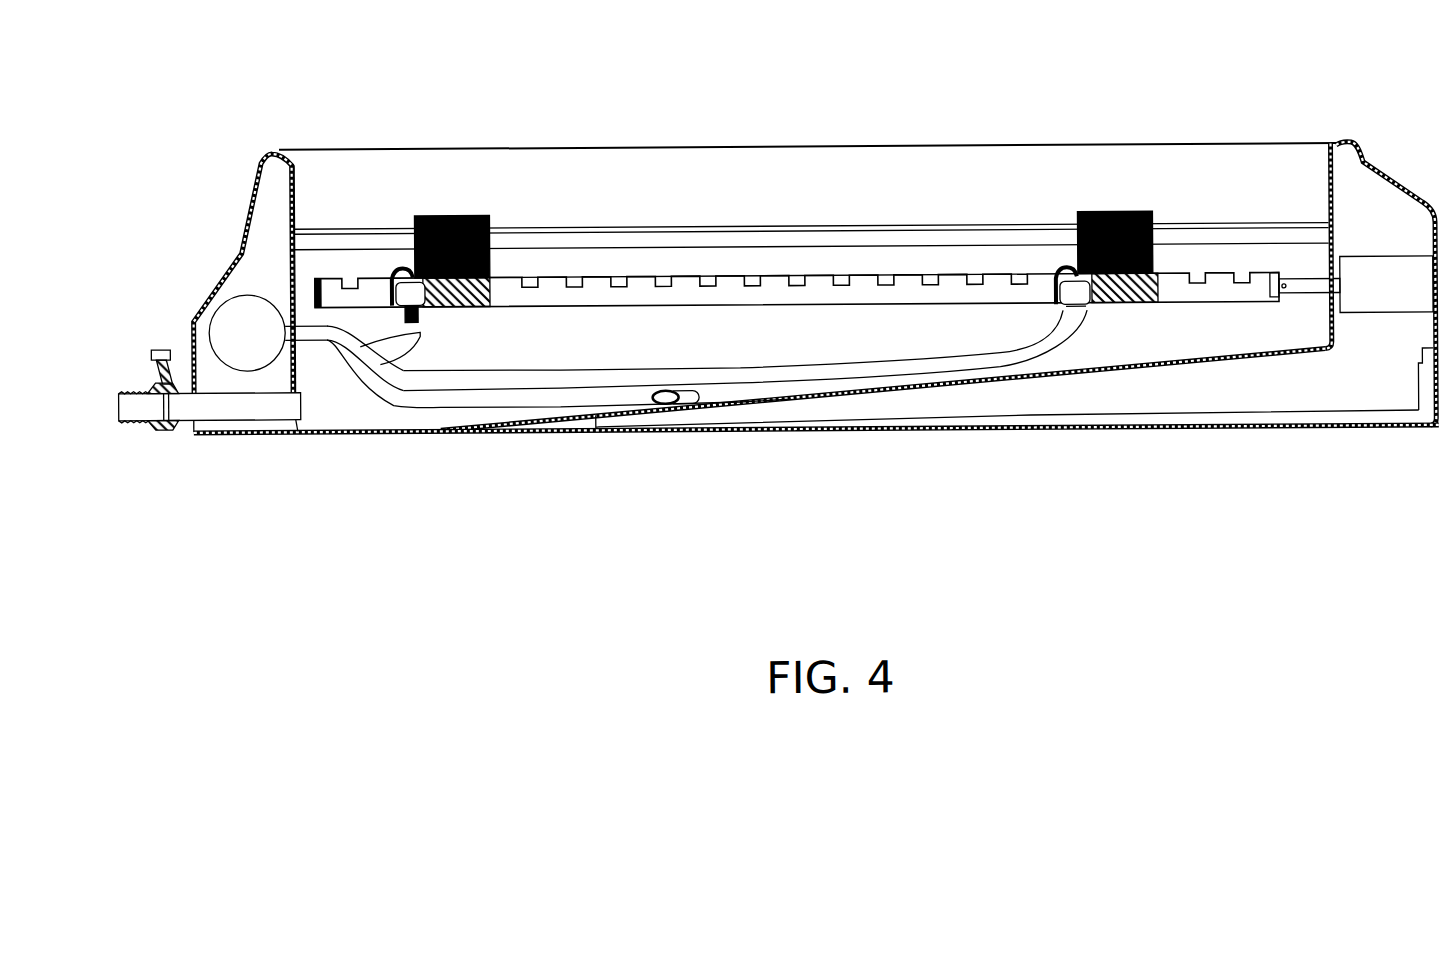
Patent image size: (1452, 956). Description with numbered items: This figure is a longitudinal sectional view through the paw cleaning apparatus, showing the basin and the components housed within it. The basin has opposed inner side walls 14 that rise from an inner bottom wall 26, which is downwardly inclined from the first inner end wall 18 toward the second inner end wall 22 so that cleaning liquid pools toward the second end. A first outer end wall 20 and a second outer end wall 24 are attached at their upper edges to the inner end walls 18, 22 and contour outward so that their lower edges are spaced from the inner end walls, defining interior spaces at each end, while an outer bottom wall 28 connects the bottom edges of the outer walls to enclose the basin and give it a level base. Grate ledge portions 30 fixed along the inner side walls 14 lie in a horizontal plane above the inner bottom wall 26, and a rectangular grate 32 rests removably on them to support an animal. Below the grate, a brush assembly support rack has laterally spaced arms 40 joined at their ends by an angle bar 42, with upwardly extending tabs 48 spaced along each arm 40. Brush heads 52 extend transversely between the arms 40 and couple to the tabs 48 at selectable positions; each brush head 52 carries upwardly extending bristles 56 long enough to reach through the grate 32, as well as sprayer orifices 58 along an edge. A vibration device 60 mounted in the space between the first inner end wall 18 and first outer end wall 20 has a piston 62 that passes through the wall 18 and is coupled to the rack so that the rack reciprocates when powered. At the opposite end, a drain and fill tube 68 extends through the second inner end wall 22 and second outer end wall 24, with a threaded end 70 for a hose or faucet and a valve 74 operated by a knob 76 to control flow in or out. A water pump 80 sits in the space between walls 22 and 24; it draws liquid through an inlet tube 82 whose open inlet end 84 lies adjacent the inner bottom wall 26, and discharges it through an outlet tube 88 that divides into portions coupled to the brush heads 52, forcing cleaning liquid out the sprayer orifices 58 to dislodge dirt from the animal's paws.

The inner side walls 14 is at (636, 184).
The first inner end wall 18 is at (1327, 180).
The first outer end wall 20 is at (1418, 197).
The second inner end wall 22 is at (298, 184).
The second outer end wall 24 is at (252, 185).
The inner bottom wall 26 is at (1243, 363).
The outer bottom wall 28 is at (571, 432).
The grate ledge portions 30 is at (873, 245).
The grate 32 is at (805, 226).
The rack arms 40 is at (683, 308).
The angle bar 42 is at (331, 277).
The tabs 48 is at (738, 274).
The brush head 52 is at (457, 306).
The bristles 56 is at (453, 213).
The sprayer orifices 58 is at (405, 270).
The vibration device 60 is at (1388, 316).
The piston 62 is at (1308, 300).
The drain and fill tube 68 is at (240, 410).
The threaded end 70 is at (130, 418).
The valve 74 is at (163, 419).
The knob 76 is at (160, 344).
The water pump 80 is at (230, 337).
The inlet tube 82 is at (440, 407).
The open inlet end 84 is at (665, 398).
The outlet tube 88 is at (542, 368).